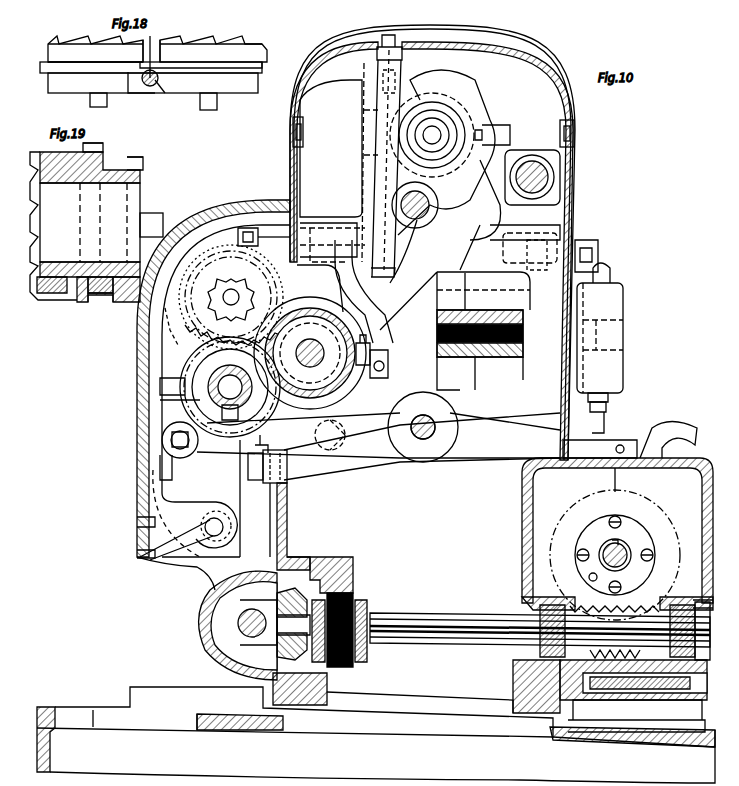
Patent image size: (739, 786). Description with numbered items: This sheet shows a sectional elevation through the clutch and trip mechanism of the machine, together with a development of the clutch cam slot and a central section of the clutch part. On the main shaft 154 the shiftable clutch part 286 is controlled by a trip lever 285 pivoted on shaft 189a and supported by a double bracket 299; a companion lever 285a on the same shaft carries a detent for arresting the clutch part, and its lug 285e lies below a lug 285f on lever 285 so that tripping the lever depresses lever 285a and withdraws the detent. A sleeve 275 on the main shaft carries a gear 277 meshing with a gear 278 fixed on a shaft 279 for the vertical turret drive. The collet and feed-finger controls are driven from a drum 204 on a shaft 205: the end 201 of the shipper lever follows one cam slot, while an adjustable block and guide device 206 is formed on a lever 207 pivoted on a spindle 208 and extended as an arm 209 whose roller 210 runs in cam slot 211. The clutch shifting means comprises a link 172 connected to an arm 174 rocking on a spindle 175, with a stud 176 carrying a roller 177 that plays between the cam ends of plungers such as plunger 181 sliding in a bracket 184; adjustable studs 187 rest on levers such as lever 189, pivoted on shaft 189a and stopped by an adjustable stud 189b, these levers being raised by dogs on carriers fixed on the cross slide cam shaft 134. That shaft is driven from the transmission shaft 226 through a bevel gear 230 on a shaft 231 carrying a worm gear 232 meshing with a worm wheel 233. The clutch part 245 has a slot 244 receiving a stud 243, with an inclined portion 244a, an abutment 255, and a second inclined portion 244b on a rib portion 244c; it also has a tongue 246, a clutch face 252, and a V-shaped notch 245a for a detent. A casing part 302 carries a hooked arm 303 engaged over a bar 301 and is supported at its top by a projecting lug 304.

In FIG. 10, the cross slide cam and carrier shaft 134 is at (622, 548).
In FIG. 10, the main shaft 154 is at (200, 384).
In FIG. 10, the link 172 is at (540, 256).
In FIG. 10, the arm 174 is at (530, 295).
In FIG. 10, the spindle 175 is at (448, 326).
In FIG. 10, the stud 176 is at (598, 244).
In FIG. 10, the roller 177 is at (600, 250).
In FIG. 10, the plunger 181 is at (612, 274).
In FIG. 10, the bracket 184 is at (624, 304).
In FIG. 10, the adjustable stud 187 is at (610, 396).
In FIG. 10, the lever 189 is at (608, 420).
In FIG. 10, the shaft 189a is at (425, 440).
In FIG. 10, the adjustable stud 189b is at (287, 465).
In FIG. 10, the end of shipper lever 201 is at (398, 318).
In FIG. 10, the drum 204 is at (346, 395).
In FIG. 10, the shaft 205 is at (330, 338).
In FIG. 10, the adjustable block and guide device 206 is at (384, 95).
In FIG. 10, the lever 207 is at (336, 177).
In FIG. 10, the spindle 208 is at (238, 237).
In FIG. 10, the arm 209 is at (340, 283).
In FIG. 10, the roller 210 is at (362, 368).
In FIG. 10, the cam slot 211 is at (358, 388).
In FIG. 10, the transmission shaft 226 is at (252, 610).
In FIG. 10, the bevel gear 230 is at (277, 650).
In FIG. 10, the shaft 231 is at (465, 642).
In FIG. 10, the worm gear 232 is at (622, 612).
In FIG. 10, the worm wheel 233 is at (672, 604).
In FIG. 18, the stud 243 is at (160, 80).
In FIG. 18, the slot 244 is at (48, 80).
In FIG. 19, the slot 244 is at (143, 158).
In FIG. 18, the inclined portion 244a is at (158, 94).
In FIG. 18, the inclined portion 244b is at (140, 66).
In FIG. 19, the inclined portion 244b is at (95, 303).
In FIG. 18, the rib portion 244c is at (70, 60).
In FIG. 19, the rib portion 244c is at (104, 148).
In FIG. 18, the clutch part 245 is at (262, 56).
In FIG. 19, the clutch part 245 is at (58, 145).
In FIG. 18, the V-shaped notch 245a is at (212, 61).
In FIG. 19, the V-shaped notch 245a is at (45, 294).
In FIG. 18, the tongue 246 is at (90, 102).
In FIG. 19, the tongue 246 is at (152, 216).
In FIG. 18, the clutch face 252 is at (240, 46).
In FIG. 19, the clutch face 252 is at (44, 216).
In FIG. 18, the abutment 255 is at (138, 95).
In FIG. 10, the sleeve 275 is at (670, 428).
In FIG. 10, the gear 277 is at (240, 342).
In FIG. 10, the gear 278 is at (205, 345).
In FIG. 10, the shaft 279 is at (235, 290).
In FIG. 10, the trip lever 285 is at (470, 430).
In FIG. 10, the companion lever 285a is at (185, 458).
In FIG. 10, the lug 285e is at (346, 440).
In FIG. 10, the lug 285f is at (342, 432).
In FIG. 10, the shiftable clutch part 286 is at (240, 362).
In FIG. 10, the double bracket 299 is at (160, 468).
In FIG. 10, the bar 301 is at (205, 540).
In FIG. 10, the casing part 302 is at (137, 398).
In FIG. 10, the hooked arm 303 is at (173, 505).
In FIG. 10, the projecting lug 304 is at (268, 212).